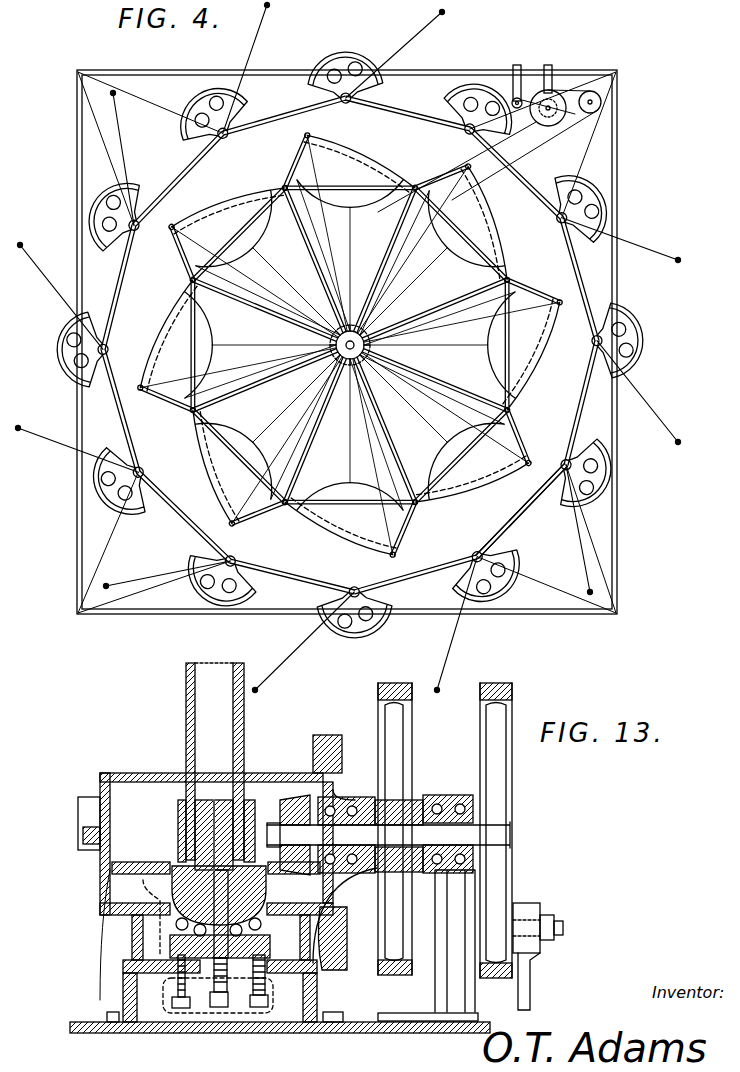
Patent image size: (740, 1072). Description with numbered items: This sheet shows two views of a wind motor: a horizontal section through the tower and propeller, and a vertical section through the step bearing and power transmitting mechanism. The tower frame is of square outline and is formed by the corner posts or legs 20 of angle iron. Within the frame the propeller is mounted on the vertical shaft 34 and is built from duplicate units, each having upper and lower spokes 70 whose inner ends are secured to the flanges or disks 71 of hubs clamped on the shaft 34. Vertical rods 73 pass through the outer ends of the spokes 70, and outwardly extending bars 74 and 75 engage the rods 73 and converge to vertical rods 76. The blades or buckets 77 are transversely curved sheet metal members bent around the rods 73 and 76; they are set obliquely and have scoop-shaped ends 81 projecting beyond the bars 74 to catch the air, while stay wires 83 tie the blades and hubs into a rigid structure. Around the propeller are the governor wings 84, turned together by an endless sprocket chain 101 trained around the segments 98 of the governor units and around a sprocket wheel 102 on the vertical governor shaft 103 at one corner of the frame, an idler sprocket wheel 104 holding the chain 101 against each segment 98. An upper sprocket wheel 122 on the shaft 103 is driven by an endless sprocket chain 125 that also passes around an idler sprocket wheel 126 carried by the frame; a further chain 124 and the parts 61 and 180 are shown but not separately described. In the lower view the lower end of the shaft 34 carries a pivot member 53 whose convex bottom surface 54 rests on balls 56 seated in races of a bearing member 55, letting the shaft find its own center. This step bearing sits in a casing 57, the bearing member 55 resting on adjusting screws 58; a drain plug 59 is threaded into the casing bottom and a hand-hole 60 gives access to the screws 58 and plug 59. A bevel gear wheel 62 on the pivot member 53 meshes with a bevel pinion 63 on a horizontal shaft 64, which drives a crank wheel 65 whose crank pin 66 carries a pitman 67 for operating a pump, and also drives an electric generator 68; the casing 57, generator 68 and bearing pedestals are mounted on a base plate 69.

In FIG. 4, the corner posts or legs 20 is at (77, 76).
In FIG. 4, the shaft 34 is at (372, 348).
In FIG. 13, the shaft 34 is at (186, 704).
In FIG. 13, the pivot member 53 is at (186, 812).
In FIG. 13, the convex bottom surface 54 is at (172, 898).
In FIG. 13, the bearing member 55 is at (170, 948).
In FIG. 13, the balls 56 is at (176, 926).
In FIG. 13, the casing 57 is at (100, 785).
In FIG. 13, the adjusting screws 58 is at (180, 1008).
In FIG. 13, the drain plug 59 is at (225, 1007).
In FIG. 13, the hand-hole 60 is at (285, 1013).
In FIG. 13, the inner shaft 61 is at (216, 828).
In FIG. 13, the bevel gear wheel 62 is at (165, 866).
In FIG. 13, the bevel pinion 63 is at (322, 806).
In FIG. 13, the horizontal shaft 64 is at (388, 836).
In FIG. 13, the crank wheel 65 is at (508, 778).
In FIG. 13, the crank pin 66 is at (552, 924).
In FIG. 13, the pitman or connecting rod 67 is at (532, 976).
In FIG. 13, the electric generator 68 is at (332, 921).
In FIG. 13, the base plate 69 is at (355, 1033).
In FIG. 4, the spokes 70 is at (376, 434).
In FIG. 4, the flanges or disks 71 is at (385, 430).
In FIG. 4, the vertical rods 73 is at (404, 528).
In FIG. 4, the outwardly extending bars 74 is at (340, 526).
In FIG. 4, the outwardly extending bars 75 is at (350, 496).
In FIG. 4, the vertical rods 76 is at (374, 458).
In FIG. 4, the propeller blades or buckets 77 is at (284, 502).
In FIG. 4, the scoop-shaped ends 81 is at (350, 502).
In FIG. 4, the stay wires 83 is at (455, 402).
In FIG. 4, the governor wings 84 is at (652, 405).
In FIG. 4, the sprocket segments 98 is at (592, 203).
In FIG. 4, the endless sprocket chain 101 is at (184, 174).
In FIG. 4, the sprocket wheel 102 is at (538, 122).
In FIG. 4, the vertical governor shaft 103 is at (551, 92).
In FIG. 4, the idler sprocket wheel 104 is at (518, 97).
In FIG. 4, the upper sprocket wheel 122 is at (580, 90).
In FIG. 4, the cable 124 is at (480, 157).
In FIG. 4, the endless sprocket chain 125 is at (592, 125).
In FIG. 4, the idler sprocket wheel 126 is at (601, 102).
In FIG. 4, the link rod 180 is at (520, 511).